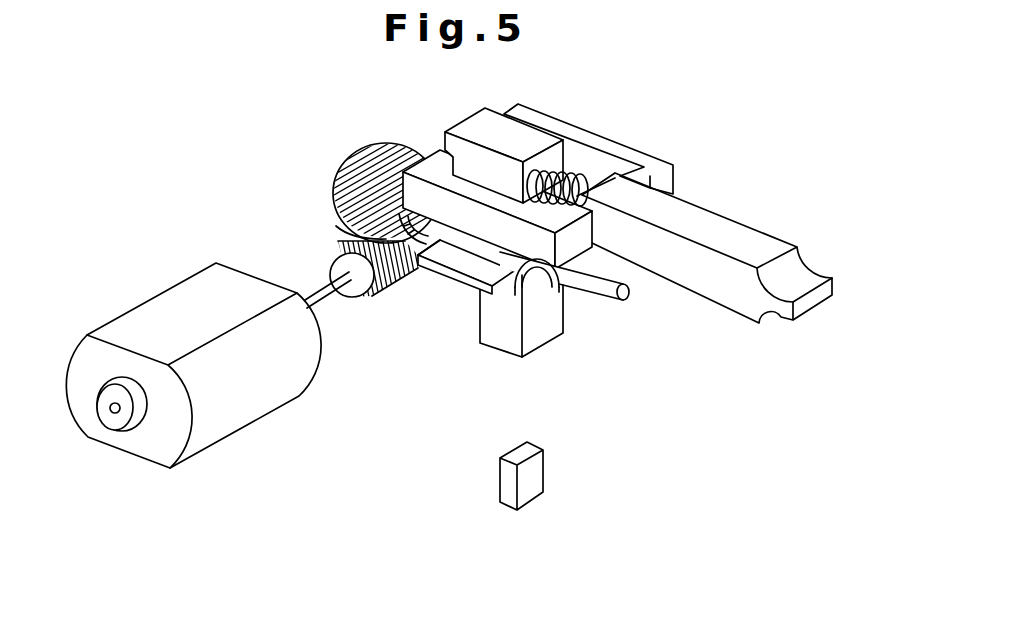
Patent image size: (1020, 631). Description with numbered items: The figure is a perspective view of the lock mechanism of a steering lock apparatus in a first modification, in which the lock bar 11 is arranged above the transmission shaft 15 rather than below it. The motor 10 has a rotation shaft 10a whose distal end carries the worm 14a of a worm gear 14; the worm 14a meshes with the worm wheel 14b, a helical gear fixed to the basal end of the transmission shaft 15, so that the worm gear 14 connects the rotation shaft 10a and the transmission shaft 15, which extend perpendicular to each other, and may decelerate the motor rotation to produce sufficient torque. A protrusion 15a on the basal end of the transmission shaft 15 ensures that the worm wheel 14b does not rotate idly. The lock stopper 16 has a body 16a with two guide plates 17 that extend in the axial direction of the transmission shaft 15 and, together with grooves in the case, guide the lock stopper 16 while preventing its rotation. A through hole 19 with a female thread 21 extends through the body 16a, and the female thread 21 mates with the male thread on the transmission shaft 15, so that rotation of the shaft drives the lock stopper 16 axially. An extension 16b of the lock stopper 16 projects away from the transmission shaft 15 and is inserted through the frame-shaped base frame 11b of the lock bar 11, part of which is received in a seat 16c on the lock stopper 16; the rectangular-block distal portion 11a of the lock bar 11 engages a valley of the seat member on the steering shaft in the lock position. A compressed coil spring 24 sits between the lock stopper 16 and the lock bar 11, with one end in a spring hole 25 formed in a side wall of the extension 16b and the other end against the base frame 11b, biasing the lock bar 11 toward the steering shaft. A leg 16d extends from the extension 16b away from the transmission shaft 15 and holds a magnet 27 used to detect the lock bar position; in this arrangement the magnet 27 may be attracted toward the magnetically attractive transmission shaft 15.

The motor 10 is at (153, 293).
The rotation shaft 10a is at (312, 285).
The lock bar 11 is at (707, 247).
The distal portion 11a is at (735, 222).
The base frame 11b is at (661, 160).
The worm gear 14 is at (345, 201).
The worm 14a is at (340, 250).
The worm wheel 14b is at (333, 192).
The transmission shaft 15 is at (613, 308).
The protrusion 15a is at (414, 228).
The lock stopper 16 is at (488, 255).
The body 16a is at (450, 250).
The extension 16b is at (480, 340).
The seat 16c is at (442, 157).
The leg 16d is at (547, 348).
The guide plate 17 is at (455, 286).
The through hole 19 is at (531, 293).
The female thread 21 is at (561, 286).
The coil spring 24 is at (575, 170).
The spring hole 25 is at (552, 182).
The magnet 27 is at (545, 470).